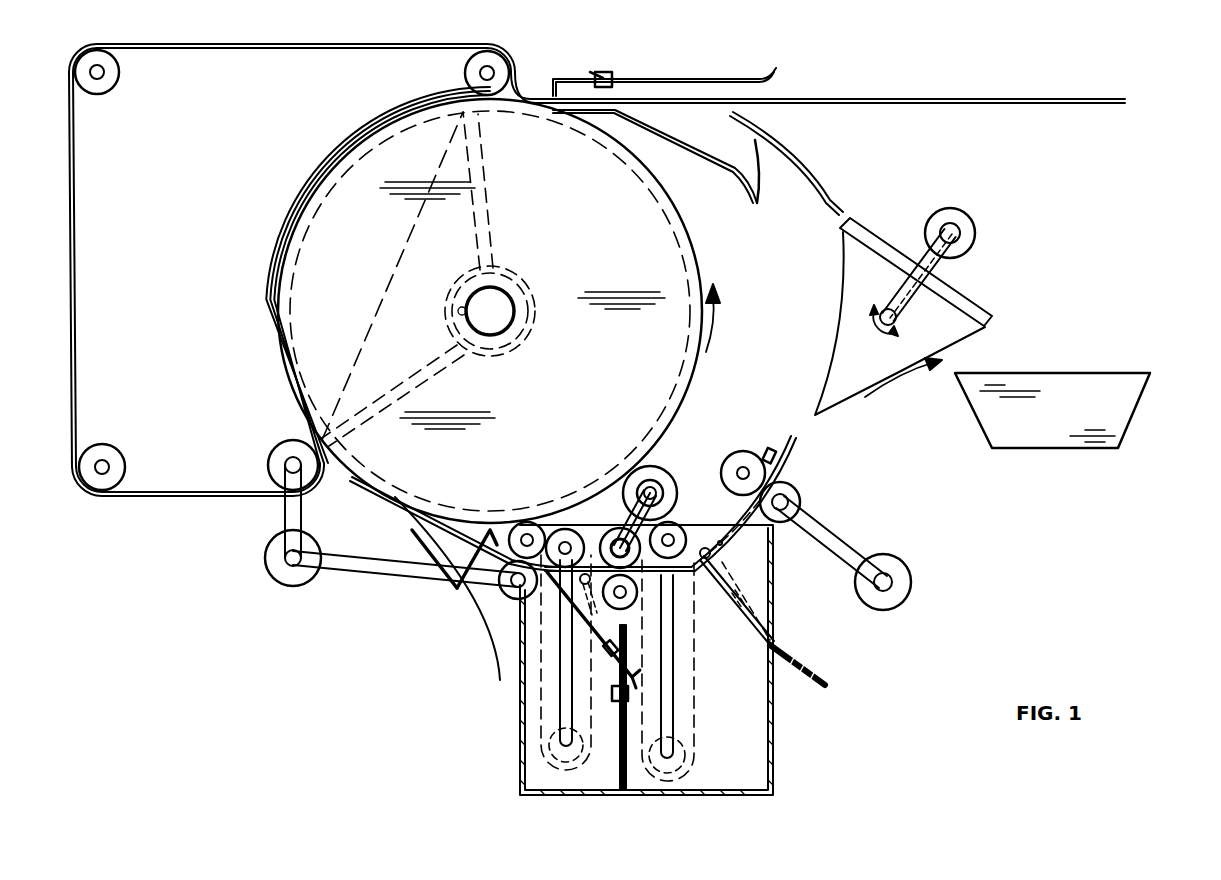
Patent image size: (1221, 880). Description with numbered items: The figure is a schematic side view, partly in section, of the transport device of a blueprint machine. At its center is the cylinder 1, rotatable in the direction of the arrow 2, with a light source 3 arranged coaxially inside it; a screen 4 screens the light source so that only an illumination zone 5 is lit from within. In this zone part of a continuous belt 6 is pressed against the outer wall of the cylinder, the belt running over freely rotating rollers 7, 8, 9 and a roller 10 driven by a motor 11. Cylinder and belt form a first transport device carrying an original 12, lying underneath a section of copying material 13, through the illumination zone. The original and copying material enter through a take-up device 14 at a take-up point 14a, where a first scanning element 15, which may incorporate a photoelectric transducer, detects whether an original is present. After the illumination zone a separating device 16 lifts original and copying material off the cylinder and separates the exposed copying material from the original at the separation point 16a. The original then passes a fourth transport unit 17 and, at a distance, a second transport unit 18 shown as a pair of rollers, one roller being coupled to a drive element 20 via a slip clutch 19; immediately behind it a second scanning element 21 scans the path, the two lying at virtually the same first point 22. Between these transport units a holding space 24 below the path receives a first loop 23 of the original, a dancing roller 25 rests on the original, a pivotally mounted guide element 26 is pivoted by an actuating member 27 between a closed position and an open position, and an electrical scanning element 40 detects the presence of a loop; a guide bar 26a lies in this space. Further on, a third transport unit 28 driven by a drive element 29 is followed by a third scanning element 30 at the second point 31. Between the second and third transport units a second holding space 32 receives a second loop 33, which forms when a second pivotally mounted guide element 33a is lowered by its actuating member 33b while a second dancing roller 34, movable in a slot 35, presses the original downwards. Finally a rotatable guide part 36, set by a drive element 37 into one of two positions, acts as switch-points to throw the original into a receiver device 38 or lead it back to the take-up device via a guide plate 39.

The cylinder 1 is at (562, 444).
The arrow 2 is at (716, 316).
The light source 3 is at (518, 294).
The screen 4 is at (485, 187).
The illumination zone 5 is at (398, 272).
The continuous belt 6 is at (74, 340).
The roller 7 is at (112, 452).
The roller 8 is at (110, 82).
The roller 9 is at (465, 73).
The roller 10 is at (268, 461).
The motor 11 is at (308, 580).
The original 12 is at (940, 105).
The copying material 13 is at (912, 98).
The take-up device 14 is at (680, 80).
The take-up point 14a is at (612, 76).
The first scanning element 15 is at (598, 75).
The separating device 16 is at (472, 528).
The separation point 16a is at (430, 515).
The fourth transport unit 17 is at (526, 522).
The second transport unit 18 is at (612, 532).
The slip clutch 19 is at (658, 476).
The drive element 20 is at (640, 470).
The second scanning element 21 is at (676, 532).
The first point 22 is at (662, 508).
The first loop 23 is at (541, 732).
The holding space 24 is at (535, 778).
The dancing roller 25 is at (572, 532).
The pivotally mounted guide element 26 is at (514, 594).
The guide bar 26a is at (560, 697).
The actuating member 27 is at (612, 655).
The third transport unit 28 is at (760, 474).
The drive element 29 is at (910, 579).
The third scanning element 30 is at (766, 452).
The second point 31 is at (790, 445).
The second holding space 32 is at (768, 716).
The second loop 33 is at (695, 748).
The second pivotally mounted guide element 33a is at (712, 553).
The actuating member 33b is at (808, 660).
The second dancing roller 34 is at (712, 528).
The slot 35 is at (673, 708).
The rotatable guide part 36 is at (995, 318).
The drive element 37 is at (978, 240).
The receiver device 38 is at (1145, 395).
The guide plate 39 is at (812, 183).
The electrical scanning element 40 is at (628, 690).